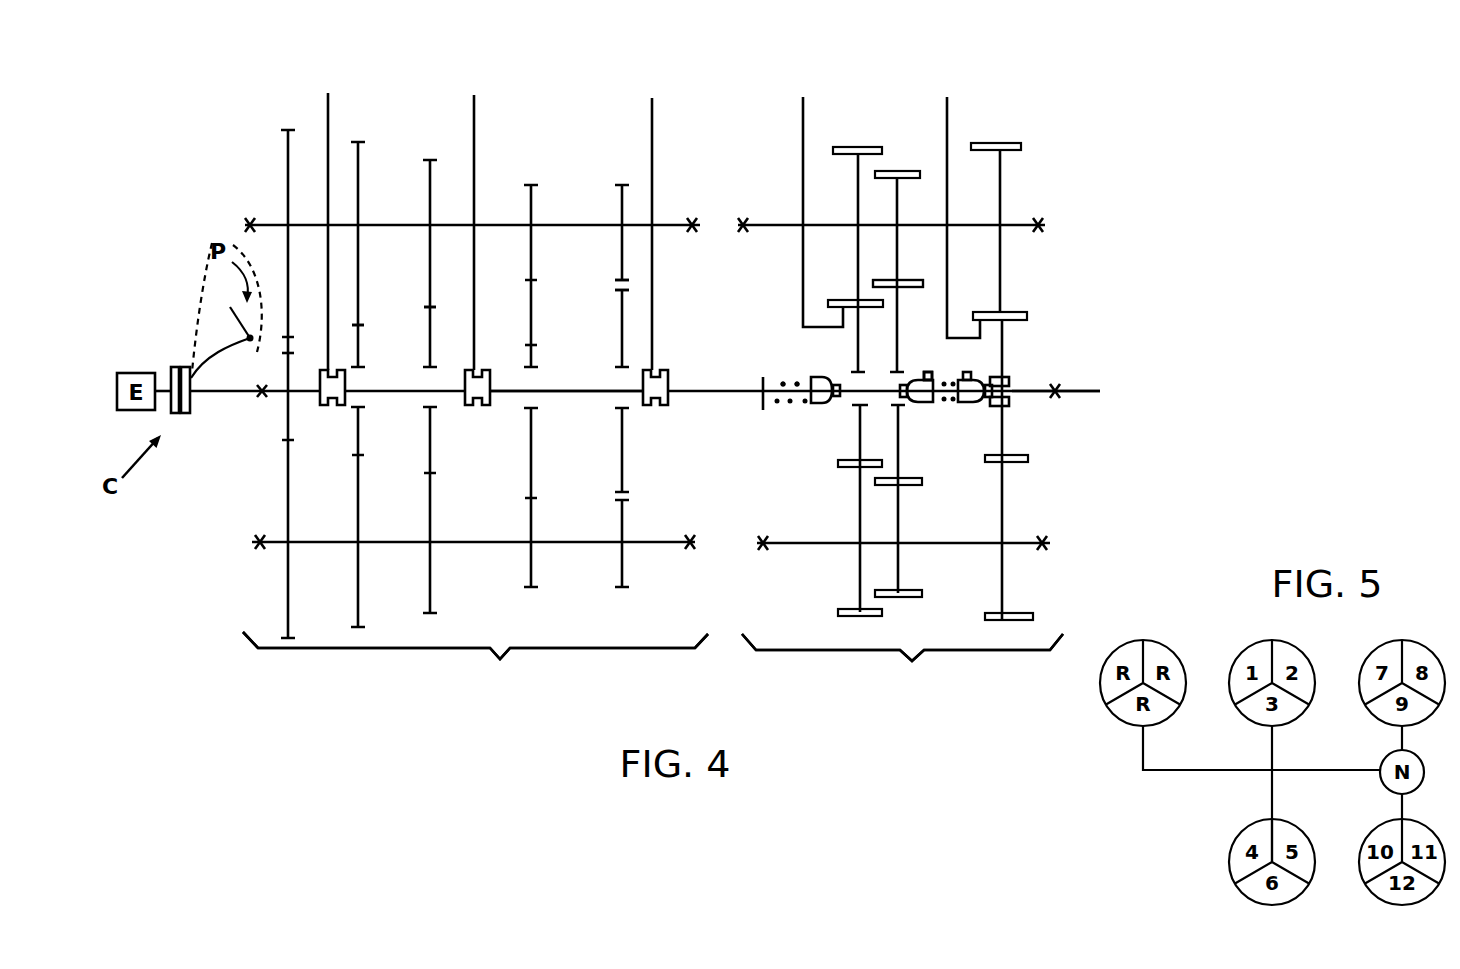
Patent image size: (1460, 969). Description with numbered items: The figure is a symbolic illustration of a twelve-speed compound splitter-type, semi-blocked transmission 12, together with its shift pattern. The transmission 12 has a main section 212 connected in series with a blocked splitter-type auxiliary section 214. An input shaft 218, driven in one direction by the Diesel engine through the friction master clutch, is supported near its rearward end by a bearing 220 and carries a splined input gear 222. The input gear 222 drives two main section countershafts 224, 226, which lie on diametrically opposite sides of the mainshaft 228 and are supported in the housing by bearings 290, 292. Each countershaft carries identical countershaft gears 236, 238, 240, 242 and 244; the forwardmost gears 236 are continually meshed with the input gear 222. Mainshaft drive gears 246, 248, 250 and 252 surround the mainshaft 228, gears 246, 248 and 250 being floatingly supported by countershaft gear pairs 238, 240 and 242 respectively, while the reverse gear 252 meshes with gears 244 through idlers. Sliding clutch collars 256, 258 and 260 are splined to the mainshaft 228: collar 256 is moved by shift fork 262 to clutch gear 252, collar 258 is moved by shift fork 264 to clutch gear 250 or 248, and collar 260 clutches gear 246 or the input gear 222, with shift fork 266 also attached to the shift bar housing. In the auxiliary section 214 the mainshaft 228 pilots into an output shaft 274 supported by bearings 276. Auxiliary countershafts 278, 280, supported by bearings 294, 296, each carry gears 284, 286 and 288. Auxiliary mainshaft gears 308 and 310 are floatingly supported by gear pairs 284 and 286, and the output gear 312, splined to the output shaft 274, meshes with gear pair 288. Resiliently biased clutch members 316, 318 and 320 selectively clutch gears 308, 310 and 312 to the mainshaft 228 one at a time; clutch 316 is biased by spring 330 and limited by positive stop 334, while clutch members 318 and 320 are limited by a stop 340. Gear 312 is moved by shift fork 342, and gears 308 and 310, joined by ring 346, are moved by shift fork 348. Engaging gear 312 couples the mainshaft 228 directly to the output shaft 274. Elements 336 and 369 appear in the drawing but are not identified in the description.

The transmission 12 is at (720, 156).
The main section 212 is at (475, 663).
The auxiliary section 214 is at (902, 667).
The input shaft 218 is at (220, 395).
The bearing 220 is at (262, 397).
The input gear 222 is at (288, 353).
The main section countershaft 224 is at (376, 226).
The main section countershaft 226 is at (400, 542).
The mainshaft 228 is at (570, 393).
The countershaft gears 236 is at (288, 137).
The countershaft gears 238 is at (358, 148).
The countershaft gears 240 is at (430, 182).
The countershaft gears 242 is at (531, 198).
The countershaft gears 244 is at (622, 198).
The mainshaft drive gear 246 is at (358, 352).
The mainshaft drive gear 248 is at (430, 307).
The mainshaft drive gear 250 is at (531, 345).
The reverse gear 252 is at (622, 293).
The sliding clutch collar 256 is at (655, 406).
The sliding clutch collar 258 is at (480, 406).
The sliding clutch collar 260 is at (335, 406).
The shift fork 262 is at (652, 325).
The shift fork 264 is at (474, 285).
The shift fork 266 is at (328, 272).
The output shaft 274 is at (1092, 390).
The bearings 276 is at (1058, 397).
The auxiliary section countershaft 278 is at (897, 225).
The auxiliary section countershaft 280 is at (905, 543).
The auxiliary countershaft gear 284 is at (858, 196).
The auxiliary countershaft gear 286 is at (897, 270).
The auxiliary countershaft gear 288 is at (1000, 180).
The bearing 290 is at (250, 225).
The bearing 292 is at (692, 225).
The bearing 294 is at (743, 225).
The bearing 296 is at (1038, 225).
The auxiliary section mainshaft gear 308 is at (858, 340).
The auxiliary section mainshaft gear 310 is at (905, 374).
The output gear 312 is at (1005, 335).
The clutch member 316 is at (780, 406).
The clutch member 318 is at (915, 404).
The clutch member 320 is at (968, 404).
The spring 330 is at (783, 378).
The positive stop 334 is at (830, 405).
The synchronizer 336 is at (948, 380).
The stop 340 is at (1010, 386).
The shift fork 342 is at (947, 287).
The ring 346 is at (900, 292).
The shift fork 348 is at (803, 100).
The synchronizer 369 is at (763, 385).